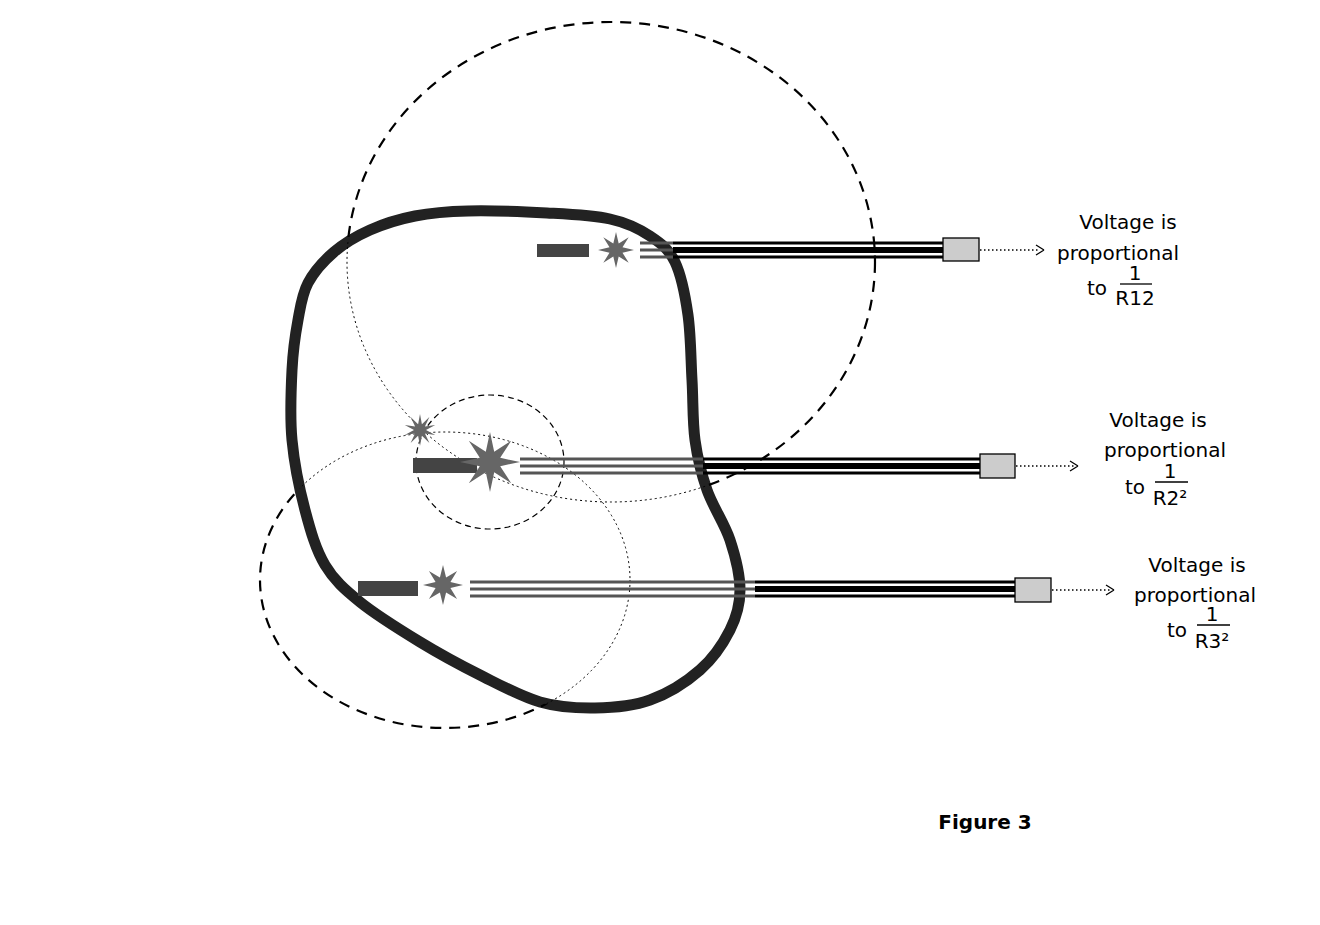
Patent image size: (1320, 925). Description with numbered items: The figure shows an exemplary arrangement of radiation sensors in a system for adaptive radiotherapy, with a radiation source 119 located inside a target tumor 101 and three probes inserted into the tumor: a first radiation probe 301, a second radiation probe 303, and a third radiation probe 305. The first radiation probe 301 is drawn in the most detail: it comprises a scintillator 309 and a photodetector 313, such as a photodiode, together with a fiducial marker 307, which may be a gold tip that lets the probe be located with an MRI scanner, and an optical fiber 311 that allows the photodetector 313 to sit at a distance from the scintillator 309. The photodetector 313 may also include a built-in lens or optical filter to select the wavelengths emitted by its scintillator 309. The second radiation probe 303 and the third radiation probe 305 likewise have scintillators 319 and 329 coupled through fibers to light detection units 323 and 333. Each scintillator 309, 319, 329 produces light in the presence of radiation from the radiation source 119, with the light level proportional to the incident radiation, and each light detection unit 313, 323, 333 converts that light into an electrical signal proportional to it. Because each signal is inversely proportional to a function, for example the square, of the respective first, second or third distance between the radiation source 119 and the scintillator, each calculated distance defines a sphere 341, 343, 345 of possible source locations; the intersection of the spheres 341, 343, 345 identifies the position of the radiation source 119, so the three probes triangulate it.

The tumor 101 is at (515, 459).
The radiation source 119 is at (420, 430).
The radiation probe #1 301 is at (701, 217).
The radiation probe #2 303 is at (696, 425).
The radiation probe #3 305 is at (686, 691).
The fiducial marker 307 is at (540, 248).
The scintillator 309 is at (618, 242).
The optical fiber 311 is at (770, 226).
The photodetector 313 is at (955, 235).
The scintillator 319 is at (472, 445).
The light detection unit 323 is at (985, 452).
The scintillator 329 is at (450, 605).
The light detection unit 333 is at (1010, 606).
The sphere 341 is at (790, 92).
The sphere 343 is at (503, 453).
The sphere 345 is at (265, 525).